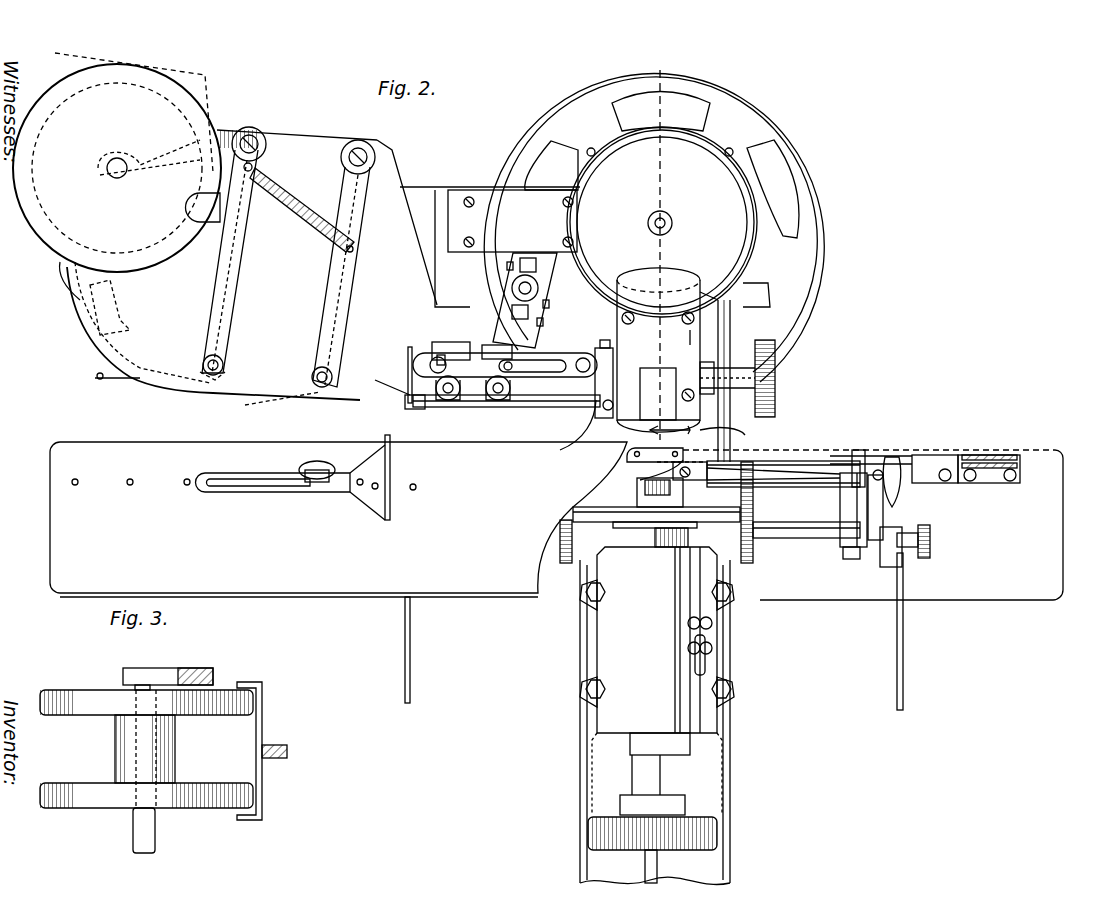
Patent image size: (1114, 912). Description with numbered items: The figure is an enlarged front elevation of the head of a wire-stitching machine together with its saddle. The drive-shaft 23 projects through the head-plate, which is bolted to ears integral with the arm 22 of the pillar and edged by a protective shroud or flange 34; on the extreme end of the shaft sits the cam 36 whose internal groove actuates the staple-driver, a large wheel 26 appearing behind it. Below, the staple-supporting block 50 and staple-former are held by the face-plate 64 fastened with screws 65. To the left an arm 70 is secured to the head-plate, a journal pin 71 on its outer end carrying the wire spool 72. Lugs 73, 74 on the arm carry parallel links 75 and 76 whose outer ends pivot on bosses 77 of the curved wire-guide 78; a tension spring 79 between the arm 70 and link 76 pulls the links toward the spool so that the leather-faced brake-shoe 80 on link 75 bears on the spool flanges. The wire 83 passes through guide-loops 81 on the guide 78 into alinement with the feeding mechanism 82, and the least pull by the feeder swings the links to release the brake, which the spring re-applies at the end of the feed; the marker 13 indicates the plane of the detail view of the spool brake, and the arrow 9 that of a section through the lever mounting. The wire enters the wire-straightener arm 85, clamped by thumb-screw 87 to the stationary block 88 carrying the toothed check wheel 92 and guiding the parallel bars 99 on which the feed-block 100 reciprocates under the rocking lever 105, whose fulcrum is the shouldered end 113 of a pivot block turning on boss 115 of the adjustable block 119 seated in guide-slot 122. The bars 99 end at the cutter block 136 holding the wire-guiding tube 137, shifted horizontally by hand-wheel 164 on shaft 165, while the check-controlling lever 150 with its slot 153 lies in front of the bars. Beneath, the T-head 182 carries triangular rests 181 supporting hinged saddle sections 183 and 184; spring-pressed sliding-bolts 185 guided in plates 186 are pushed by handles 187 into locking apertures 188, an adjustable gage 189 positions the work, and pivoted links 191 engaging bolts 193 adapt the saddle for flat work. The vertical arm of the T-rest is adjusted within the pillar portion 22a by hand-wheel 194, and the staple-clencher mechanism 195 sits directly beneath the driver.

In FIG. 2, the section line 9 is at (670, 438).
In FIG. 2, the pin 13 is at (258, 172).
In FIG. 2, the arm 22 is at (706, 297).
In FIG. 2, the pedestal column 22a is at (700, 790).
In FIG. 2, the drive-shaft 23 is at (669, 215).
In FIG. 2, the hand wheel 26 is at (828, 240).
In FIG. 2, the shroud or flange 34 is at (712, 140).
In FIG. 2, the cam 36 is at (662, 222).
In FIG. 2, the staple-supporting block 50 is at (715, 432).
In FIG. 2, the face-plate 64 is at (668, 328).
In FIG. 2, the fastening screws 65 is at (686, 392).
In FIG. 2, the arm 70 is at (400, 187).
In FIG. 3, the arm 70 is at (160, 675).
In FIG. 2, the journal pin 71 is at (117, 178).
In FIG. 3, the journal pin 71 is at (148, 832).
In FIG. 2, the wire spool 72 is at (130, 205).
In FIG. 3, the wire spool 72 is at (62, 690).
In FIG. 2, the lug 73 is at (260, 133).
In FIG. 2, the lug 74 is at (362, 140).
In FIG. 2, the parallel link 75 is at (225, 306).
In FIG. 3, the parallel link 75 is at (288, 750).
In FIG. 2, the parallel link 76 is at (333, 335).
In FIG. 2, the bosses 77 is at (208, 380).
In FIG. 2, the wire-guide 78 is at (125, 358).
In FIG. 2, the tension spring 79 is at (312, 222).
In FIG. 2, the brake-shoe 80 is at (212, 222).
In FIG. 3, the brake-shoe 80 is at (263, 710).
In FIG. 2, the guide-loops 81 is at (87, 340).
In FIG. 2, the feeding mechanism 82 is at (440, 355).
In FIG. 2, the wire 83 is at (64, 270).
In FIG. 2, the wire-straightener arm 85 is at (418, 410).
In FIG. 2, the thumb-screw 87 is at (408, 352).
In FIG. 2, the stationary block 88 is at (455, 345).
In FIG. 2, the toothed wheel 92 is at (448, 400).
In FIG. 2, the guide bars 99 is at (560, 408).
In FIG. 2, the feed-block 100 is at (498, 402).
In FIG. 2, the rocking lever 105 is at (505, 315).
In FIG. 2, the shouldered end 113 is at (510, 266).
In FIG. 2, the cylindrical boss 115 is at (538, 282).
In FIG. 2, the adjustable block 119 is at (548, 305).
In FIG. 2, the guide-slot 122 is at (541, 322).
In FIG. 2, the cutter block 136 is at (612, 405).
In FIG. 2, the wire-guiding tube 137 is at (565, 448).
In FIG. 2, the check-controlling lever 150 is at (548, 365).
In FIG. 2, the slot 153 is at (535, 370).
In FIG. 2, the hand-wheel 164 is at (775, 375).
In FIG. 2, the hand-wheel shaft 165 is at (730, 370).
In FIG. 2, the triangular rests 181 is at (563, 565).
In FIG. 2, the T-head 182 is at (570, 525).
In FIG. 2, the saddle section 183 is at (338, 519).
In FIG. 2, the saddle section 184 is at (873, 525).
In FIG. 2, the sliding-bolts 185 is at (885, 455).
In FIG. 2, the plate 186 is at (945, 483).
In FIG. 2, the handles 187 is at (896, 498).
In FIG. 2, the locking apertures 188 is at (858, 450).
In FIG. 2, the adjustable gage 189 is at (365, 508).
In FIG. 2, the pivoted links 191 is at (406, 705).
In FIG. 2, the bolt 193 is at (932, 558).
In FIG. 2, the hand-wheel 194 is at (590, 830).
In FIG. 2, the staple-clencher mechanism 195 is at (678, 470).